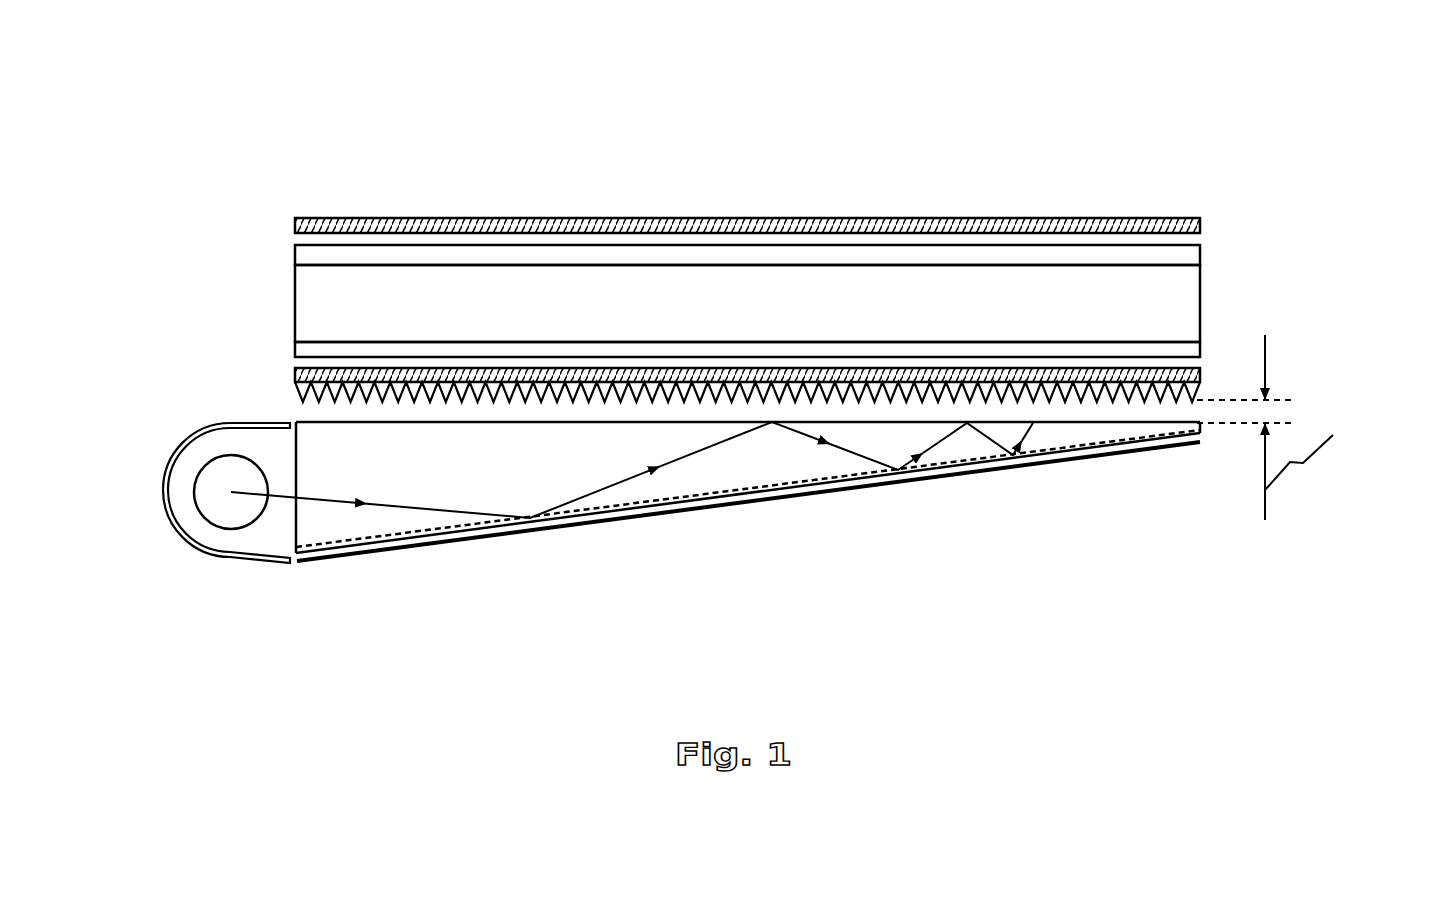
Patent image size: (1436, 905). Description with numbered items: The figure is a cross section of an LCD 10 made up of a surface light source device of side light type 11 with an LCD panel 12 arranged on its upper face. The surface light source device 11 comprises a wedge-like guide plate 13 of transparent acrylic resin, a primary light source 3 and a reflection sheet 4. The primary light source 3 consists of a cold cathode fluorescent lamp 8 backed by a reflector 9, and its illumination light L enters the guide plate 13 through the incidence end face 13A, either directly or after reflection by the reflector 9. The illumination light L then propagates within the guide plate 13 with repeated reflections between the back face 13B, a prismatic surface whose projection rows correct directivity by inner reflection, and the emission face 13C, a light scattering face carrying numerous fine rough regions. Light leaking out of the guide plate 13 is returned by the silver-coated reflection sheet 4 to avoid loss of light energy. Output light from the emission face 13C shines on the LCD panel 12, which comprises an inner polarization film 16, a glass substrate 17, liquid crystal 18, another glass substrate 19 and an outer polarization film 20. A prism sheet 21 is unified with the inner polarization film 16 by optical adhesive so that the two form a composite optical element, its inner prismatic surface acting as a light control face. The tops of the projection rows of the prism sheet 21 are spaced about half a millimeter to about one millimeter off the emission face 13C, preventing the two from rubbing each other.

The LCD 10 is at (800, 50).
The LCD panel 12 is at (740, 303).
The surface light source device of side light type 11 is at (653, 475).
The polarization film 20 is at (696, 211).
The glass substrate 19 is at (791, 243).
The liquid crystal 18 is at (791, 303).
The glass substrate 17 is at (791, 332).
The polarization film 16 is at (698, 365).
The prism sheet 21 is at (747, 464).
The guide plate 13 is at (748, 522).
The incidence end face 13A is at (363, 487).
The back face 13B is at (748, 528).
The emission face 13C is at (748, 522).
The reflection sheet 4 is at (748, 532).
The primary light source 3 is at (198, 466).
The fluorescent lamp 8 is at (231, 540).
The reflector 9 is at (198, 524).
The illumination light L is at (648, 520).